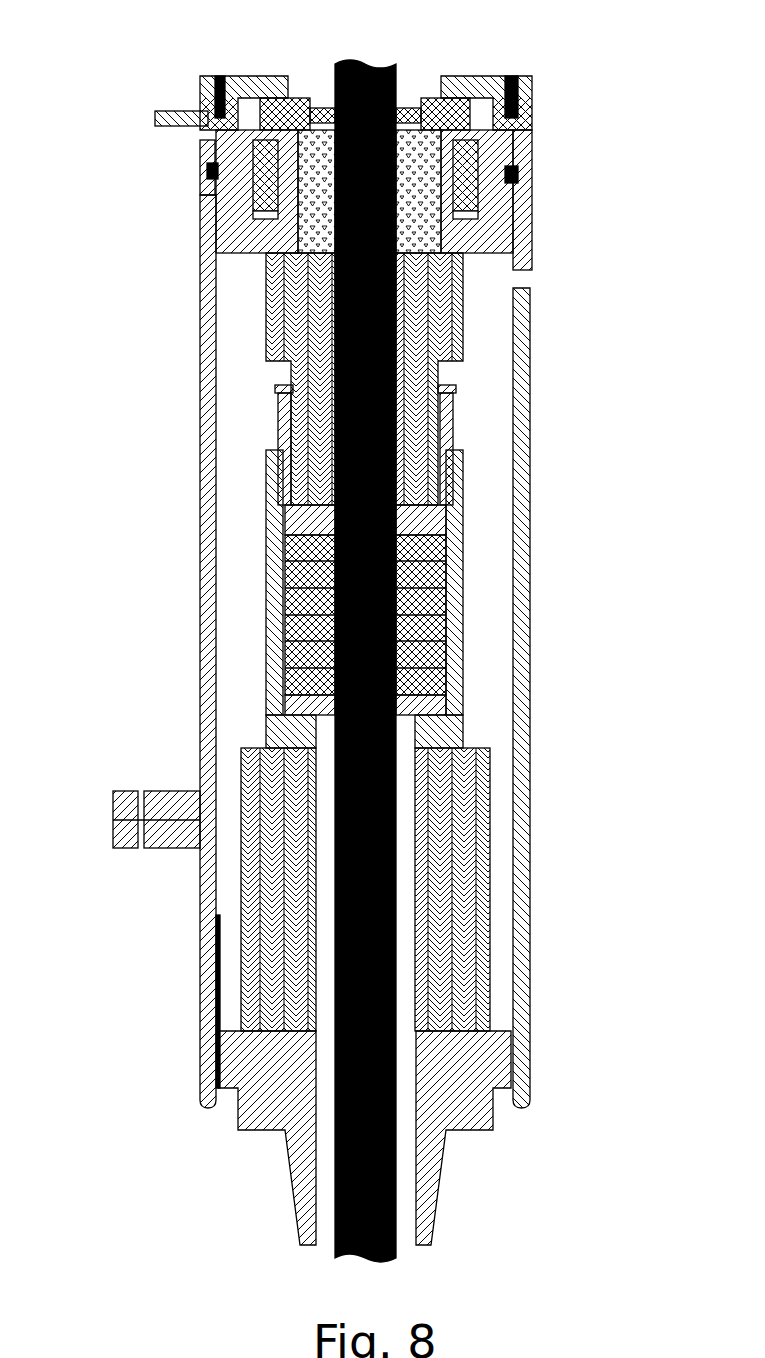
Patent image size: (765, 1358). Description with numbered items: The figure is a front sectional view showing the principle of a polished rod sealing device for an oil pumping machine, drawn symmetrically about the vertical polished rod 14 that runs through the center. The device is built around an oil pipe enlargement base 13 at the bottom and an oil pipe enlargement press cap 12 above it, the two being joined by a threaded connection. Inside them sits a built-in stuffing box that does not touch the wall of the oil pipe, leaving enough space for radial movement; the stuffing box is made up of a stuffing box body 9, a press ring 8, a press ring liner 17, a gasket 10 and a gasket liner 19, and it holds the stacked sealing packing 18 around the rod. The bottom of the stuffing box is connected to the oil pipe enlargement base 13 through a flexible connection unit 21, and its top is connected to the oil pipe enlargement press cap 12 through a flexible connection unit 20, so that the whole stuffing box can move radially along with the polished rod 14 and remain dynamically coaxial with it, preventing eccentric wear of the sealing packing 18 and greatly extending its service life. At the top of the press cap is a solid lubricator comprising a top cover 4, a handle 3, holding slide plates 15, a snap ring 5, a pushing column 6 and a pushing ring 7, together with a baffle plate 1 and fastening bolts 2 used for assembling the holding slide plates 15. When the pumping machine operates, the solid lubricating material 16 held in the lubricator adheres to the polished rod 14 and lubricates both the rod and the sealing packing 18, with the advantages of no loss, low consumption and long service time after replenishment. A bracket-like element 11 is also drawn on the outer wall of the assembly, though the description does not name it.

The baffle plate 1 is at (188, 72).
The fastening bolts 2 is at (197, 92).
The handle 3 is at (168, 120).
The top cover 4 is at (190, 158).
The snap ring 5 is at (207, 165).
The pushing column 6 is at (245, 198).
The pushing ring 7 is at (268, 210).
The press ring 8 is at (272, 410).
The stuffing box body 9 is at (265, 570).
The gasket 10 is at (275, 690).
The mounting bracket 11 is at (138, 776).
The oil pipe enlargement press cap 12 is at (197, 1007).
The oil pipe enlargement base 13 is at (238, 1110).
The polished rod 14 is at (325, 1250).
The holding slide plates 15 is at (440, 103).
The solid lubricating material 16 is at (462, 168).
The press ring liner 17 is at (415, 500).
The sealing packing 18 is at (425, 607).
The gasket liner 19 is at (415, 690).
The flexible connection unit 20 is at (420, 328).
The flexible connection unit 21 is at (455, 913).